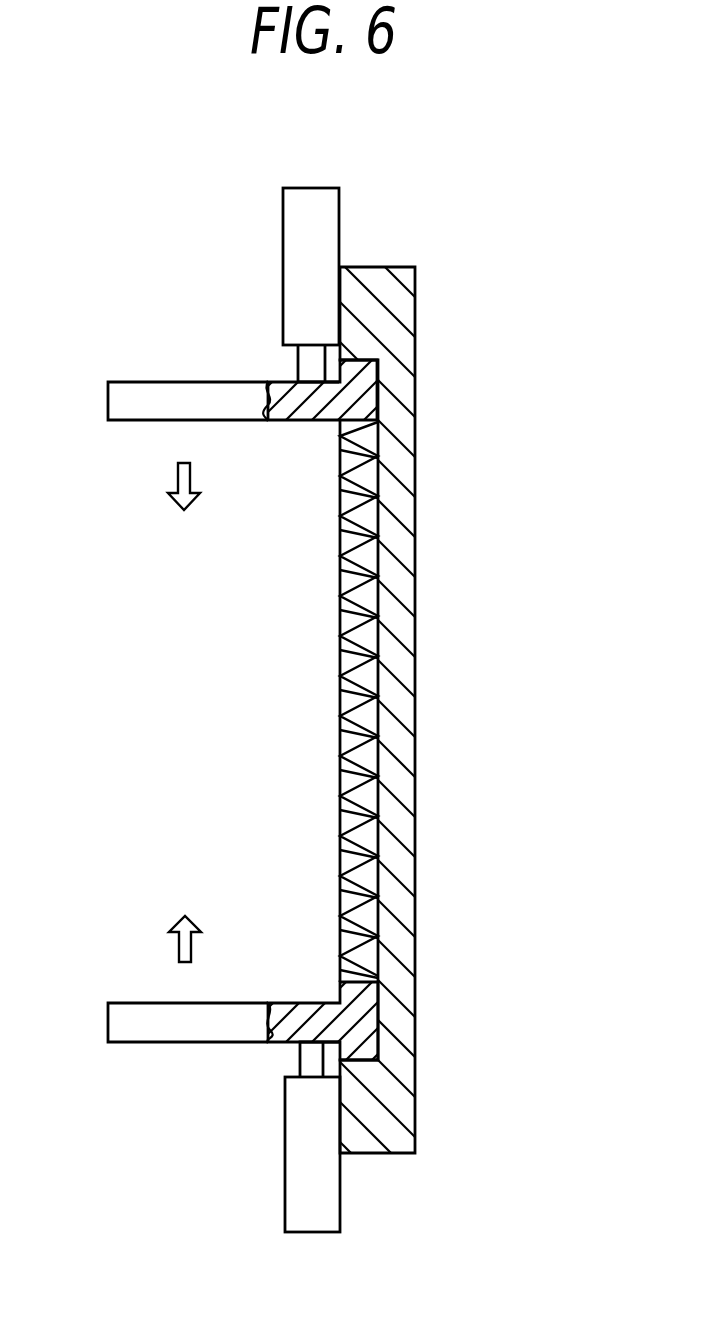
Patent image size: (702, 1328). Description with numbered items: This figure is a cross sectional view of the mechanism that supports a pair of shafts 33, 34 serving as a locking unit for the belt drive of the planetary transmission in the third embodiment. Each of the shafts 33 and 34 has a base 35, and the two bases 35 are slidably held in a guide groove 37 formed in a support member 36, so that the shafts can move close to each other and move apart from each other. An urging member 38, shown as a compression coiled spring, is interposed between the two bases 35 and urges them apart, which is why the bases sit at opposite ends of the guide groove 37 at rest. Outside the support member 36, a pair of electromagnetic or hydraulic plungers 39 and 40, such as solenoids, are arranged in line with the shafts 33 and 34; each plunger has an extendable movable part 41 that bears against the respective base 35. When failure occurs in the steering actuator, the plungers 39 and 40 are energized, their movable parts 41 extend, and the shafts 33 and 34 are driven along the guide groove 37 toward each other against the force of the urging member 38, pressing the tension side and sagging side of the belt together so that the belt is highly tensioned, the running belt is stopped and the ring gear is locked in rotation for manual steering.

The shaft 33 is at (148, 397).
The shaft 34 is at (133, 1033).
The base 35 is at (365, 391).
The support member 36 is at (446, 718).
The guide groove 37 is at (352, 808).
The urging member 38 is at (352, 609).
The plunger 39 is at (366, 223).
The plunger 40 is at (366, 1198).
The movable part 41 is at (300, 364).